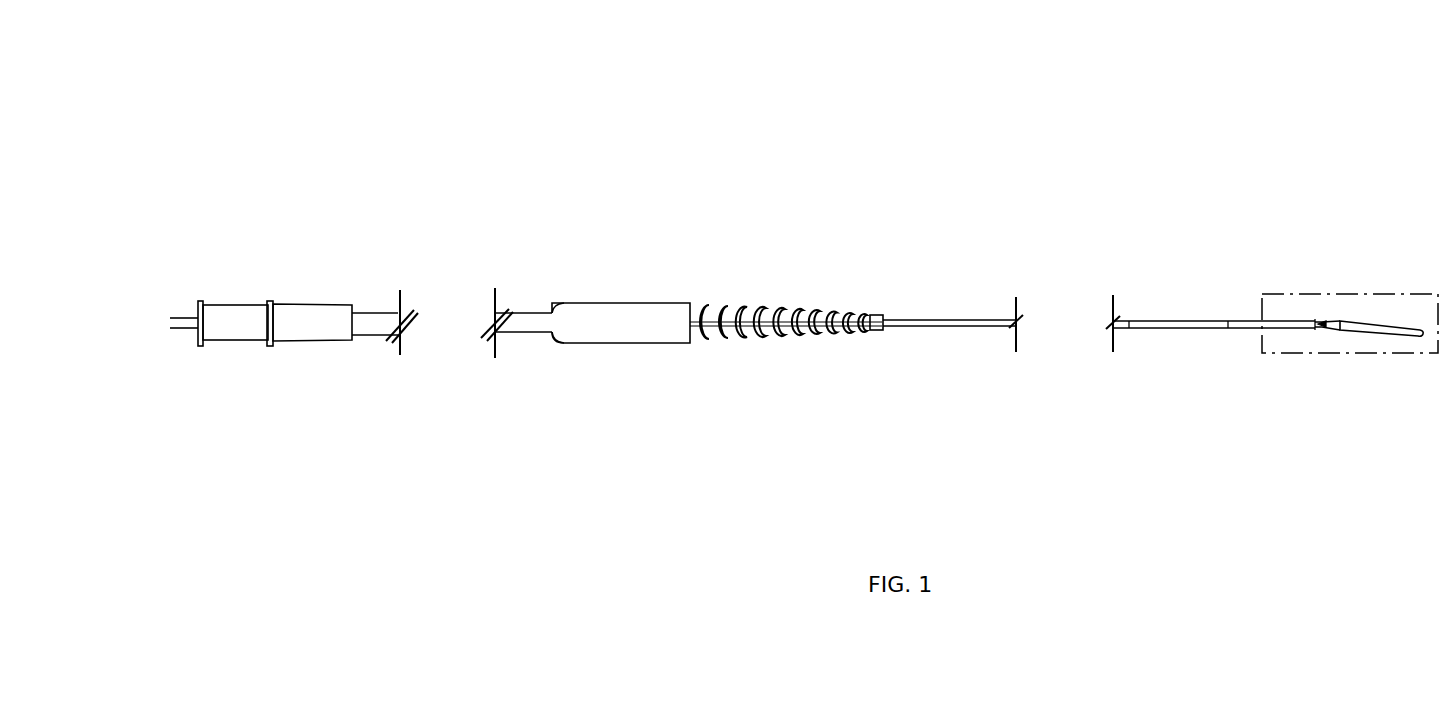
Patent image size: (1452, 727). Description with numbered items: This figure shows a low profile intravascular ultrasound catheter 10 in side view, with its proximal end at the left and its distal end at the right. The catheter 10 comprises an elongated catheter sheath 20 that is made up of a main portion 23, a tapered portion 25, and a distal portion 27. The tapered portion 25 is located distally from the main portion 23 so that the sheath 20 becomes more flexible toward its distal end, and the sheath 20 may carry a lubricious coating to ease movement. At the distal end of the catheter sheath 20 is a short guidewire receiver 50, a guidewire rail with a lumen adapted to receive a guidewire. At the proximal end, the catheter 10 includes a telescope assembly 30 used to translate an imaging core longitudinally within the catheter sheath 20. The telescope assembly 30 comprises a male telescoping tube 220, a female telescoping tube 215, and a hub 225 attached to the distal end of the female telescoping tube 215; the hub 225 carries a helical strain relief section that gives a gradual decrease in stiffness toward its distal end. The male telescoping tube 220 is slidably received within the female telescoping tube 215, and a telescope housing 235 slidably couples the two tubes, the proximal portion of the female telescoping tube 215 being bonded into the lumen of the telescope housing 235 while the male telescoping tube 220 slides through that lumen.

The low profile intravascular ultrasound catheter 10 is at (1365, 183).
The catheter sheath 20 is at (1092, 411).
The main portion 23 is at (940, 313).
The tapered portion 25 is at (1253, 322).
The distal portion 27 is at (1320, 325).
The telescope assembly 30 is at (388, 258).
The guidewire receiver 50 is at (1380, 333).
The female telescoping tube 215 is at (525, 310).
The male telescoping tube 220 is at (182, 328).
The hub 225 is at (714, 327).
The telescope housing 235 is at (242, 306).